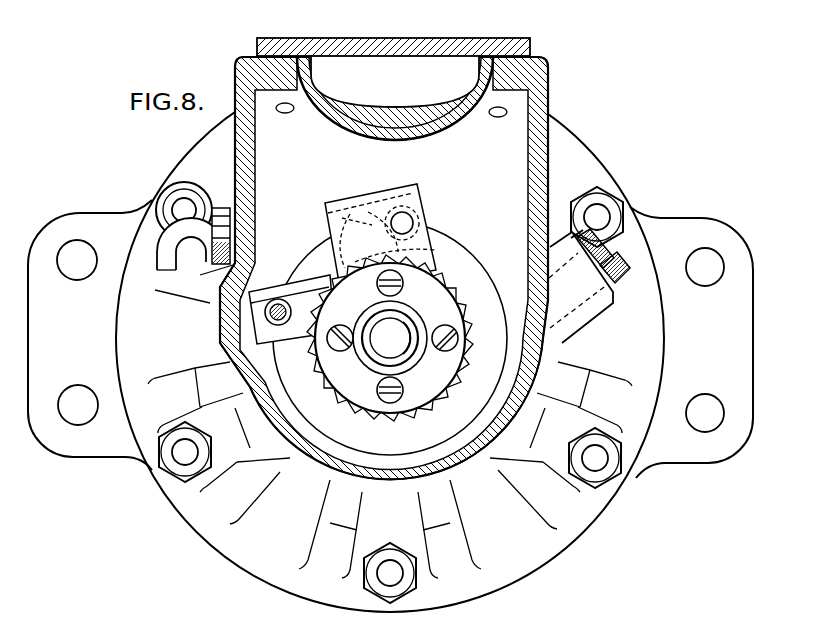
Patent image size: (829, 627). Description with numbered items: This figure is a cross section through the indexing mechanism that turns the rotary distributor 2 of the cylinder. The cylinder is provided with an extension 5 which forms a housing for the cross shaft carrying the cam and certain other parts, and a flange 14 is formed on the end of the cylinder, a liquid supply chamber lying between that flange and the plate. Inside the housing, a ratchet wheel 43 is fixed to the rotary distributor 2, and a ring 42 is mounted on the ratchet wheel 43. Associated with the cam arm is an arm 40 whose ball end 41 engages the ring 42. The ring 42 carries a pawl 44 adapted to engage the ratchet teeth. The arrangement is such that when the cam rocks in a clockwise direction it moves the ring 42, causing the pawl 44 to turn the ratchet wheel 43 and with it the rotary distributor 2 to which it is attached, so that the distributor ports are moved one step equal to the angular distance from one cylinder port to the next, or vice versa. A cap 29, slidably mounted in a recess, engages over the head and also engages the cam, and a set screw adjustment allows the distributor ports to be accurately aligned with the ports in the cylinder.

The rotary distributor 2 is at (488, 365).
The cylinder extension 5 is at (222, 317).
The flange 14 is at (585, 172).
The cap 29 is at (390, 338).
The arm 40 is at (277, 300).
The ball end 41 is at (288, 324).
The ring 42 is at (403, 193).
The ratchet wheel 43 is at (452, 283).
The pawl 44 is at (360, 204).